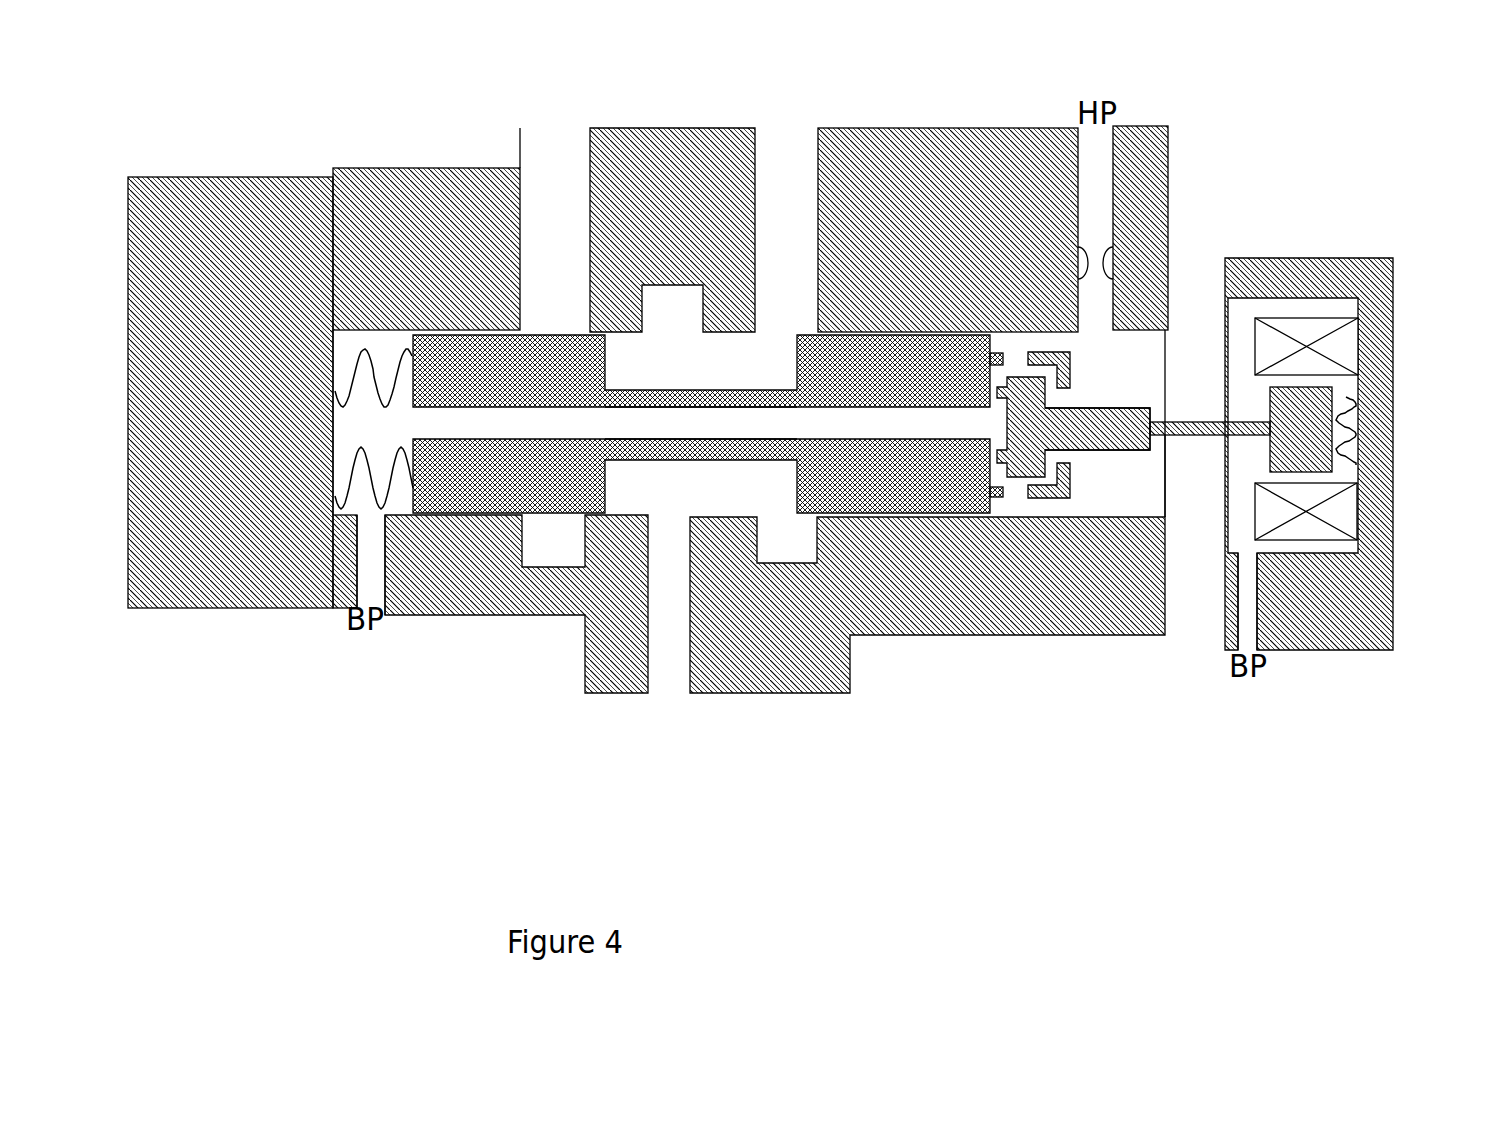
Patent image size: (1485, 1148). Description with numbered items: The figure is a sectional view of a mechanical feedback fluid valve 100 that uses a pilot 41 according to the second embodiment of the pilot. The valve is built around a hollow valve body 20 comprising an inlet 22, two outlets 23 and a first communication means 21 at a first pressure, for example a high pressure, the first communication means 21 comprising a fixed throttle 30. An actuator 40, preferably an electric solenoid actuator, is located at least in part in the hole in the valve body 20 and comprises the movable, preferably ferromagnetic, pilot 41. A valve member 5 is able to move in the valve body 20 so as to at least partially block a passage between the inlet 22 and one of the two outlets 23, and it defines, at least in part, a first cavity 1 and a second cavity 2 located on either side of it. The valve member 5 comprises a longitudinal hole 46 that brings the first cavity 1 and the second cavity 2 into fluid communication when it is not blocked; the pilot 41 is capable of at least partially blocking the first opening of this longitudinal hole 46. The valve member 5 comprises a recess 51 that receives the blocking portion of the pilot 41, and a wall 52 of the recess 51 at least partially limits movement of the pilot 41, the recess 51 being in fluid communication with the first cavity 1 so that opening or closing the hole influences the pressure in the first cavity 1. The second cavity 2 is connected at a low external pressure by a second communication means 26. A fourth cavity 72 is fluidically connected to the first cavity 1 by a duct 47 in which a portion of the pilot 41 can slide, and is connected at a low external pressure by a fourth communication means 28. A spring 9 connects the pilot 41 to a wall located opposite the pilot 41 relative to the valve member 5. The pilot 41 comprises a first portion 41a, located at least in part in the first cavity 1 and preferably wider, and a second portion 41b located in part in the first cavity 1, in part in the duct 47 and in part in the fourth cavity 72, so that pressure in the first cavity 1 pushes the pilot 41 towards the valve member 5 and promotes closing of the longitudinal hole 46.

The first cavity 1 is at (1122, 370).
The second cavity 2 is at (377, 495).
The valve member 5 is at (847, 477).
The spring 9 is at (398, 365).
The hollow valve body 20 is at (415, 225).
The first communication means 21 is at (1093, 180).
The inlet 22 is at (660, 630).
The outlets 23 is at (678, 185).
The second communication means 26 is at (368, 560).
The fourth communication means 28 is at (1247, 623).
The fixed throttle 30 is at (1097, 263).
The actuator 40 is at (1315, 330).
The pilot 41 is at (1140, 447).
The first portion 41a is at (1100, 433).
The second portion 41b is at (1190, 420).
The longitudinal hole 46 is at (883, 422).
The duct 47 is at (1197, 437).
The recess 51 is at (1002, 470).
The wall 52 is at (1052, 493).
The fourth cavity 72 is at (1268, 310).
The mechanical feedback fluid valve 100 is at (398, 718).